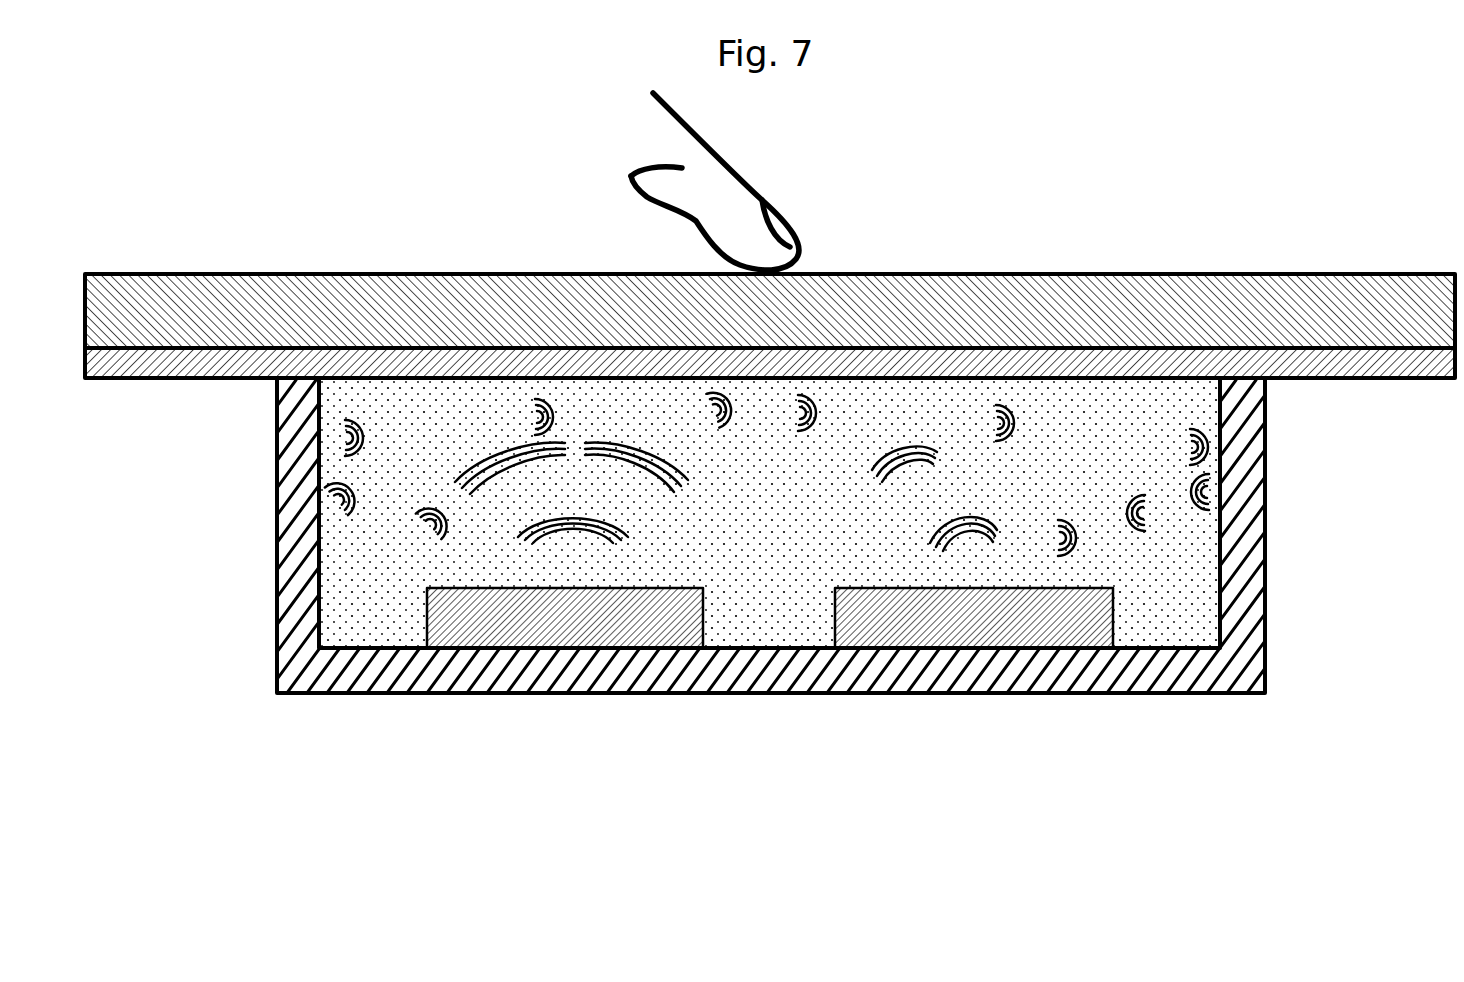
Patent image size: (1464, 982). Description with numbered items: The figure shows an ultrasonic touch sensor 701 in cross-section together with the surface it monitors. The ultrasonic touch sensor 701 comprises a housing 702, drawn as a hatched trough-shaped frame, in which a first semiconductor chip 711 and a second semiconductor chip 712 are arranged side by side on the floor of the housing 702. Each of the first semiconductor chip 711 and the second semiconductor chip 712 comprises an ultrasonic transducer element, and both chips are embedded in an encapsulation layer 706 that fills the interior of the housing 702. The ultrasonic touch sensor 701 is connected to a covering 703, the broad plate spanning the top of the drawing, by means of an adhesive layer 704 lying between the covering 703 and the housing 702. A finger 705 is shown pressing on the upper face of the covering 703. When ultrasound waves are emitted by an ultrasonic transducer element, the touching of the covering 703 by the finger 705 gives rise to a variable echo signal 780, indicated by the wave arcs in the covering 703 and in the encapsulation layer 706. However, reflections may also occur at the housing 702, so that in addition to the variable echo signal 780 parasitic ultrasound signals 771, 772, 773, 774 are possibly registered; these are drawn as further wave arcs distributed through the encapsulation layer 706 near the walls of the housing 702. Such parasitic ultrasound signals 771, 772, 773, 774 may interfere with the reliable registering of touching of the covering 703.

The ultrasonic touch sensor 701 is at (237, 736).
The housing 702 is at (745, 666).
The covering 703 is at (771, 560).
The adhesive layer 704 is at (1348, 380).
The finger 705 is at (632, 180).
The encapsulation layer 706 is at (766, 633).
The first semiconductor chip 711 is at (463, 625).
The second semiconductor chip 712 is at (1092, 634).
The parasitic ultrasound signal 771 is at (350, 503).
The parasitic ultrasound signal 772 is at (817, 392).
The parasitic ultrasound signal 773 is at (1198, 527).
The parasitic ultrasound signal 774 is at (1067, 553).
The variable echo signal 780 is at (968, 547).